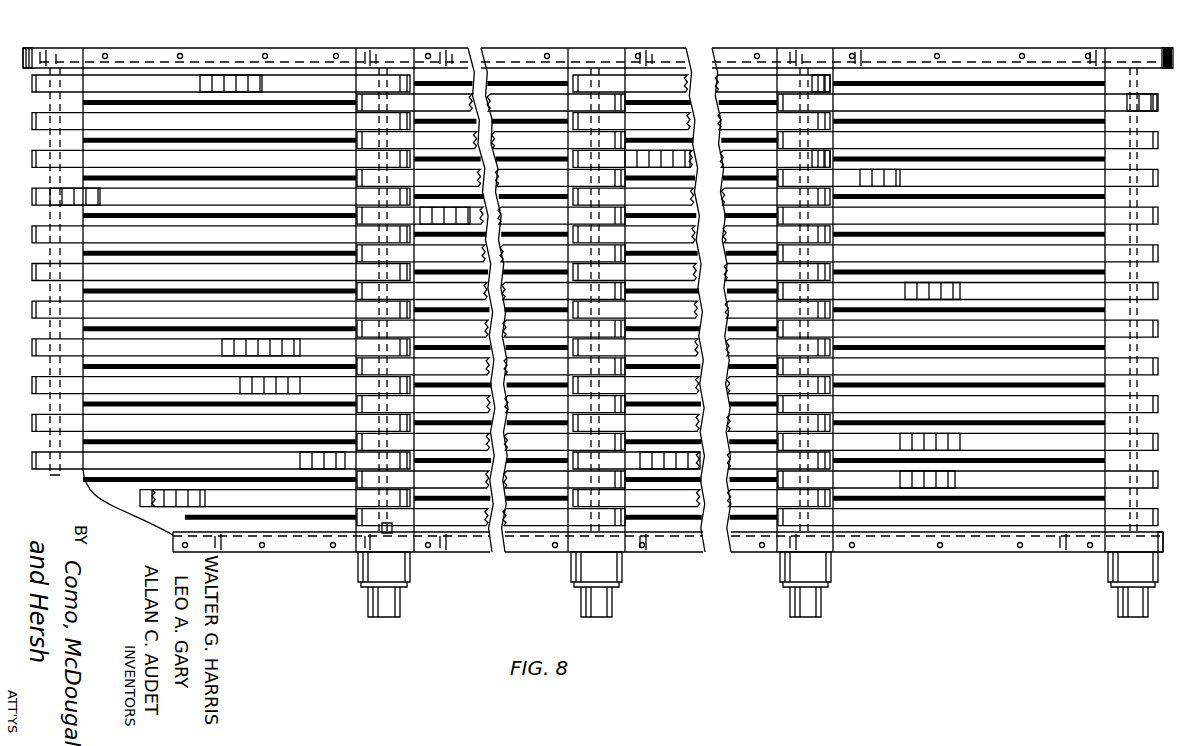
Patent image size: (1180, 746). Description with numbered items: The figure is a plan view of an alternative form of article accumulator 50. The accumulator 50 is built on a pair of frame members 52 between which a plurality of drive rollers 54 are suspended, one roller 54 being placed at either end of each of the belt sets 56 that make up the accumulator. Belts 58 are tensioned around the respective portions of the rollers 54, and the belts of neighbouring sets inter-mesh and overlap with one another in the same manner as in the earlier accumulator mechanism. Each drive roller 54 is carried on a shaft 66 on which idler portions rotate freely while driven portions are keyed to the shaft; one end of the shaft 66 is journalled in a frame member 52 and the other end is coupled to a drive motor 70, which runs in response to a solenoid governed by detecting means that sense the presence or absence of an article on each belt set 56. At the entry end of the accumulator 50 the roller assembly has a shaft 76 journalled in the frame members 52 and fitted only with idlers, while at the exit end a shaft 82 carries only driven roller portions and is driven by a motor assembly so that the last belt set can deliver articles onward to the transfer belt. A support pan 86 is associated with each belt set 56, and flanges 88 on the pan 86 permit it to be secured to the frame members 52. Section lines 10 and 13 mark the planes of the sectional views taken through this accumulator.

The accumulator 50 is at (773, 648).
The frame members 52 is at (577, 56).
The drive rollers 54 is at (378, 70).
The belt sets 56 is at (287, 468).
The belts 58 is at (270, 78).
The shaft 66 is at (387, 530).
The drive motor 70 is at (358, 573).
The shaft 76 is at (52, 476).
The shaft 82 is at (1135, 70).
The support pan 86 is at (703, 524).
The flanges 88 is at (767, 58).
The section line 10- 10 is at (340, 281).
The section line 13- 13 is at (452, 40).